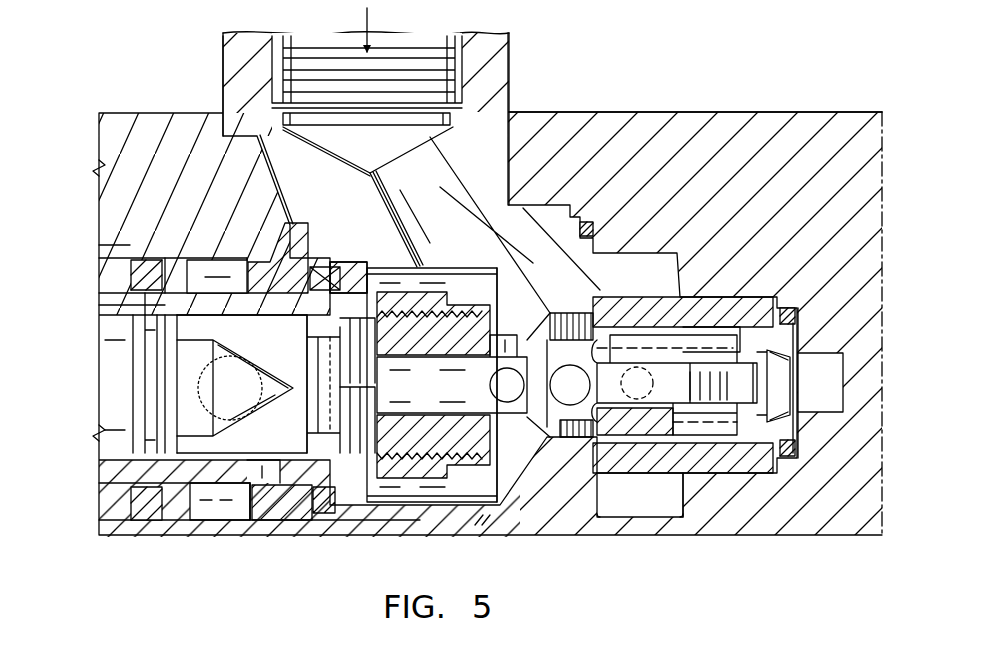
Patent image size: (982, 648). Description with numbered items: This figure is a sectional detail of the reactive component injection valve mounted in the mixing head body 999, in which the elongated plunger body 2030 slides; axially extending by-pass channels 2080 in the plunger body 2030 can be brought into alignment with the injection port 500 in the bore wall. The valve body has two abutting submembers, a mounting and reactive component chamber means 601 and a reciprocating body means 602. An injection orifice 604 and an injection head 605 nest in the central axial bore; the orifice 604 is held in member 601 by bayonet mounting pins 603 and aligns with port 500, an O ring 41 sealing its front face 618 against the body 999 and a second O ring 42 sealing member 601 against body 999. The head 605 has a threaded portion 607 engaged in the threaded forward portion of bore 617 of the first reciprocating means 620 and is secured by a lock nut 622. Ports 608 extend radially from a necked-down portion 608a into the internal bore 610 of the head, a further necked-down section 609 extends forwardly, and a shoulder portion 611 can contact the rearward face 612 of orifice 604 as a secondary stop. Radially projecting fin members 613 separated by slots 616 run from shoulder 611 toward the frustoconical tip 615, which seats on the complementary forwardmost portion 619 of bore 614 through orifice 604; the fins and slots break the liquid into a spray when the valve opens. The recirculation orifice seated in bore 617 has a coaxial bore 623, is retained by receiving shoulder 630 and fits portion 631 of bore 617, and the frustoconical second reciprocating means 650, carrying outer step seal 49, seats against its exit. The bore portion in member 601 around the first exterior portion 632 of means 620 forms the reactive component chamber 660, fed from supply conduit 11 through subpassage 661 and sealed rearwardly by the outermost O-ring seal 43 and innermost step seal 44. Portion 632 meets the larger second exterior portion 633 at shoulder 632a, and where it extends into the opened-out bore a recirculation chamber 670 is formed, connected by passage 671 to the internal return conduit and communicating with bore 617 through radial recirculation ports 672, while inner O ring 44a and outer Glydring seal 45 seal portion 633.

The supply conduit 11 is at (453, 33).
The O ring 41 is at (797, 308).
The second O ring 42 is at (585, 205).
The outermost O-ring seal 43 is at (330, 267).
The innermost step seal 44 is at (322, 272).
The inner O ring 44a is at (167, 313).
The outer Glydring seal 45 is at (140, 258).
The outer step seal 49 is at (137, 387).
The injection port 500 is at (800, 338).
The mounting and reactive component chamber means 601 is at (513, 523).
The reciprocating body means 602 is at (147, 130).
The bayonet mounting pins 603 is at (560, 392).
The injection orifice 604 is at (727, 477).
The injection head 605 is at (685, 322).
The threaded portion 607 is at (425, 485).
The ports 608 is at (510, 337).
The necked-down portion 608a is at (527, 500).
The further necked-down section 609 is at (548, 440).
The internal bore 610 is at (458, 395).
The shoulder portion 611 is at (592, 272).
The rearward face 612 is at (610, 523).
The fin members 613 is at (718, 337).
The bore 614 is at (685, 505).
The tip 615 is at (810, 385).
The slots 616 is at (685, 322).
The bore 617 is at (377, 300).
The front face 618 is at (790, 445).
The forwardmost portion of bore 619 is at (755, 470).
The first reciprocating means 620 is at (173, 256).
The lock nut 622 is at (473, 260).
The bore 623 is at (428, 322).
The receiving shoulder 630 is at (337, 495).
The portion of bore 631 is at (307, 425).
The first exterior portion 632 is at (230, 277).
The shoulder 632a is at (197, 503).
The second exterior portion 633 is at (137, 263).
The second reciprocating means 650 is at (117, 447).
The reactive component chamber 660 is at (393, 497).
The subpassage 661 is at (447, 165).
The reactive component recirculation chamber 670 is at (215, 255).
The passage 671 is at (278, 342).
The recirculation ports 672 is at (270, 477).
The mixing head body 999 is at (797, 120).
The plunger body 2030 is at (870, 320).
The by-pass channels 2080 is at (835, 420).